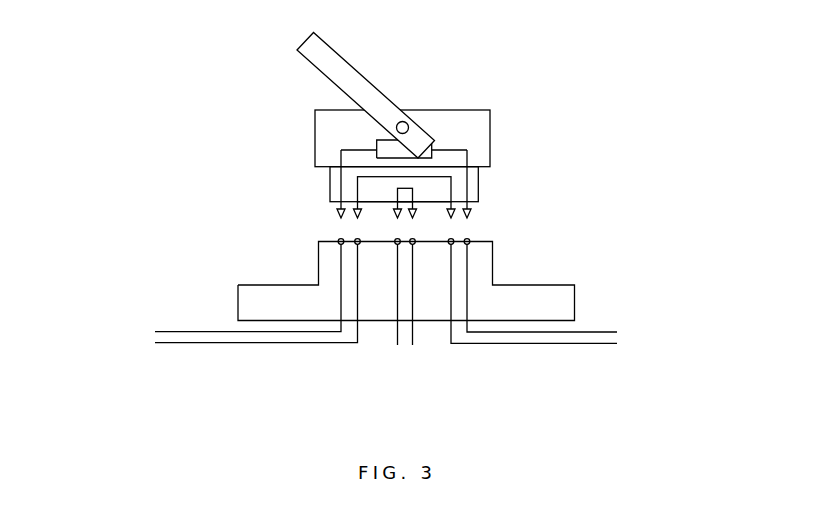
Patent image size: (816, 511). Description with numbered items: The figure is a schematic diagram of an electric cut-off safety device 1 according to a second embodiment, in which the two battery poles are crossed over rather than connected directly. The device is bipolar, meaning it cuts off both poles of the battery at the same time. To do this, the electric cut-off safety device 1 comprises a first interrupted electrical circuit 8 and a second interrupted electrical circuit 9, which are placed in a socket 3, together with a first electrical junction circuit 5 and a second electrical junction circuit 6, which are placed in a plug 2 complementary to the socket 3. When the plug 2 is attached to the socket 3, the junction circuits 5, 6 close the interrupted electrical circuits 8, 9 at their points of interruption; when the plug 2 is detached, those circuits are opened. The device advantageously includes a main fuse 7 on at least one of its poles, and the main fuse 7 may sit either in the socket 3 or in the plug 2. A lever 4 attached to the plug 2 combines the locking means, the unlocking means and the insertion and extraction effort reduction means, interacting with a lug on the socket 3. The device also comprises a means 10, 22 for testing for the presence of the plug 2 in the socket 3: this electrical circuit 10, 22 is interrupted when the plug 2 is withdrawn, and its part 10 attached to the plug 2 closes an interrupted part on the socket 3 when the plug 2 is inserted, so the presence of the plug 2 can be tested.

The electric cut-off safety device 1 is at (147, 88).
The plug 2 is at (460, 124).
The socket 3 is at (364, 277).
The lever 4 is at (395, 94).
The first electrical junction circuit 5 is at (337, 179).
The second electrical junction circuit 6 is at (471, 183).
The main fuse 7 is at (361, 136).
The first interrupted electrical circuit 8 is at (377, 288).
The second interrupted electrical circuit 9 is at (376, 319).
The part of testing electrical circuit attached to the plug 10 is at (470, 228).
The means for testing for the presence of the plug 22 is at (459, 315).